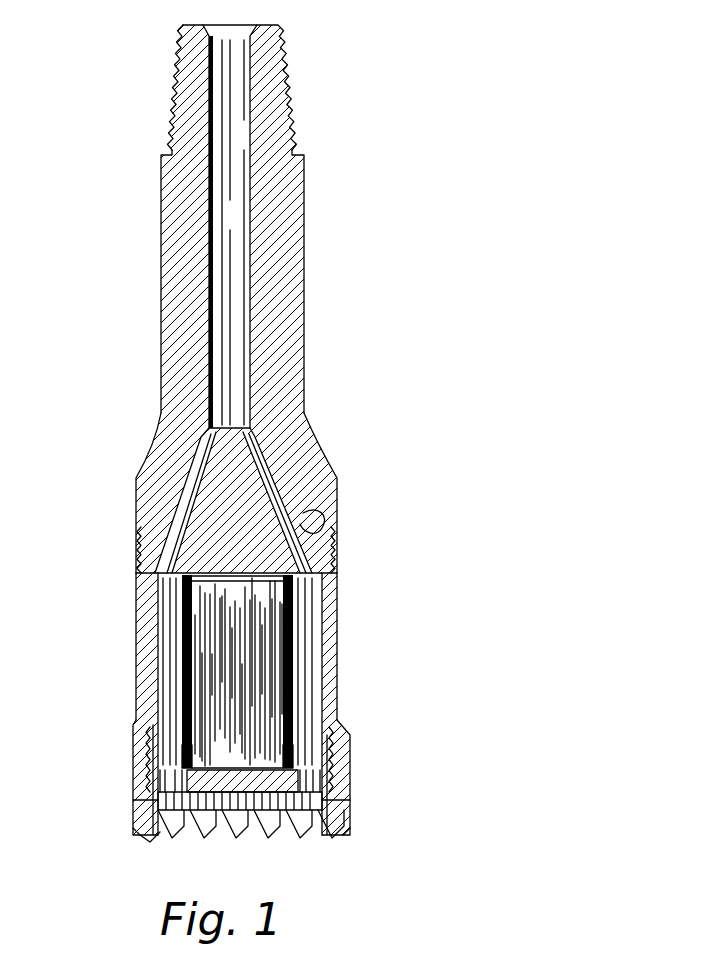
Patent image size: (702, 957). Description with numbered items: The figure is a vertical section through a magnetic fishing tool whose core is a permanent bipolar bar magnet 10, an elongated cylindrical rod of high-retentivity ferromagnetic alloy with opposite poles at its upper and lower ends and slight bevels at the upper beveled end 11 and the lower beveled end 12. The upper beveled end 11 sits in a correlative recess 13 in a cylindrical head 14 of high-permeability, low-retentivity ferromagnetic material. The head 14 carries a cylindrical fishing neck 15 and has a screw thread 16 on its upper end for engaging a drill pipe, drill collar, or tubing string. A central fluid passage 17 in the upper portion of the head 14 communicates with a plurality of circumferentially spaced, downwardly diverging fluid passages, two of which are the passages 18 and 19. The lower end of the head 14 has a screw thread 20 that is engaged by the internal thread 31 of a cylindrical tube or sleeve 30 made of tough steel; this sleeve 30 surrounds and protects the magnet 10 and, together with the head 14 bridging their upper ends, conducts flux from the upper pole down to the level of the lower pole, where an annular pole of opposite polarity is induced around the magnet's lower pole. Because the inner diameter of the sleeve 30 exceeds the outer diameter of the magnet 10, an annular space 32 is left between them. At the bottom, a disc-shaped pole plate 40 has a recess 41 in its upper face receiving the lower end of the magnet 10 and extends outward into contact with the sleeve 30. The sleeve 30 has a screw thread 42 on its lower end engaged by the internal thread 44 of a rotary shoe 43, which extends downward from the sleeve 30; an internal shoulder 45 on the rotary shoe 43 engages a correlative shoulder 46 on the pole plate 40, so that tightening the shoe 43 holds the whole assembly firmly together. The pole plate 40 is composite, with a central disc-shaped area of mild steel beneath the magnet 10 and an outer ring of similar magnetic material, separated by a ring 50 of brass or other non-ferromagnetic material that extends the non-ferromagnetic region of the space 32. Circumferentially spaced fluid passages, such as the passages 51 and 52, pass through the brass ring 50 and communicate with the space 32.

The permanent bipolar bar magnet 10 is at (250, 645).
The upper beveled end 11 is at (292, 587).
The lower beveled end 12 is at (292, 752).
The recess 13 is at (222, 562).
The cylindrical head 14 is at (160, 480).
The cylindrical fishing neck 15 is at (161, 307).
The screw thread 16 is at (180, 88).
The central fluid passage 17 is at (247, 193).
The downwardly diverging fluid passage 18 is at (222, 450).
The downwardly diverging fluid passage 19 is at (282, 450).
The screw thread 20 is at (325, 512).
The cylindrical tube or sleeve 30 is at (338, 650).
The internal thread 31 is at (333, 550).
The annular space 32 is at (300, 688).
The pole plate 40 is at (183, 835).
The recess 41 is at (242, 835).
The screw thread 42 is at (140, 737).
The rotary shoe 43 is at (137, 806).
The internal thread 44 is at (187, 772).
The internal shoulder 45 is at (345, 802).
The shoulder 46 is at (345, 770).
The ring of non-ferromagnetic material 50 is at (288, 835).
The fluid passage 51 is at (312, 838).
The fluid passage 52 is at (168, 838).